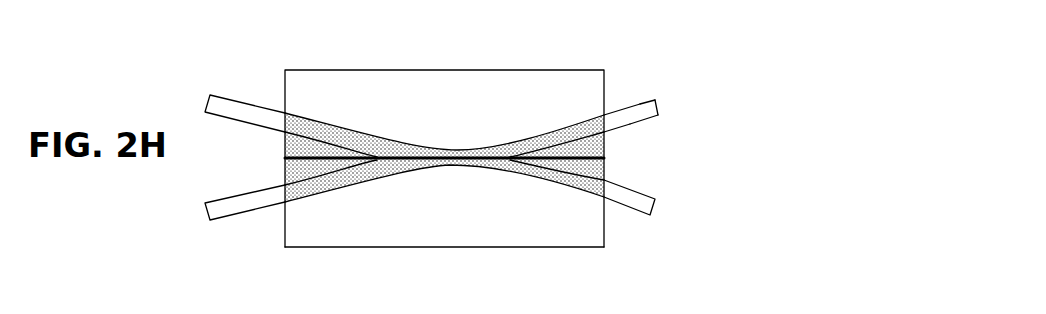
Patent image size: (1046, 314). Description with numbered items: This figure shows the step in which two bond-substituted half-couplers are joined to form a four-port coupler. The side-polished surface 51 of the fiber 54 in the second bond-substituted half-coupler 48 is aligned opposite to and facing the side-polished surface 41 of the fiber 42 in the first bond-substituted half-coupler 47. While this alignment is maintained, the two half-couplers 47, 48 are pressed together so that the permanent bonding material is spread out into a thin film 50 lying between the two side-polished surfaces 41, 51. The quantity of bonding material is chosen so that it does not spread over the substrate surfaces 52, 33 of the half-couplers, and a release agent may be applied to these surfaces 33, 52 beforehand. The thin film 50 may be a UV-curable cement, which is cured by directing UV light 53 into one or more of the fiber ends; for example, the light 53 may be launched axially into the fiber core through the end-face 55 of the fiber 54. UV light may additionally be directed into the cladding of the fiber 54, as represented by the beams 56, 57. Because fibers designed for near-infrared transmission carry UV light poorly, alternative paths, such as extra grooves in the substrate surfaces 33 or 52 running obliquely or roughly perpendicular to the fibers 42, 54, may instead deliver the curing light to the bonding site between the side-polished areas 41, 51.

The substrate surface 33 is at (564, 174).
The side-polished surface 41 is at (471, 172).
The fiber 42 is at (637, 205).
The first bond-substituted half-coupler 47 is at (626, 249).
The second bond-substituted half-coupler 48 is at (625, 62).
The thin film of permanent bonding material 50 is at (425, 157).
The side-polished surface 51 is at (458, 145).
The substrate surface 52 is at (558, 142).
The UV light 53 is at (701, 93).
The fiber 54 is at (620, 120).
The end-face 55 is at (674, 103).
The beam 56 is at (648, 84).
The beam 57 is at (657, 131).